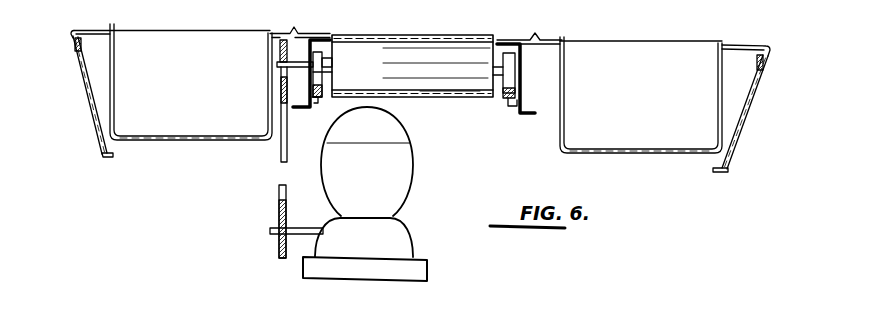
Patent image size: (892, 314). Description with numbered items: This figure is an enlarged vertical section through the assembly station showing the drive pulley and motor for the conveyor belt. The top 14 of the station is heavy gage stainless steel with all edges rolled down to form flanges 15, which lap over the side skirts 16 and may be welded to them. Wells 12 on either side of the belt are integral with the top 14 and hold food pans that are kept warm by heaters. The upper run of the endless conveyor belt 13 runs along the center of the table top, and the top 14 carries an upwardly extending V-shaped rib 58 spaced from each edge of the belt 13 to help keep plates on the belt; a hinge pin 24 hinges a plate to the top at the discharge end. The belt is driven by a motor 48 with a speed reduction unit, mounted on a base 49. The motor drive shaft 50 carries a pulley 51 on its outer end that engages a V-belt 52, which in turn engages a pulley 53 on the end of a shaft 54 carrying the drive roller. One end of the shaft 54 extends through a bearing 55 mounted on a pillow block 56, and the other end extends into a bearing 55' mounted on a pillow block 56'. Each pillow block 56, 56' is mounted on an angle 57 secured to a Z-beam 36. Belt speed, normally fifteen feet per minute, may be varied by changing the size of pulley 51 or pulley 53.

The well 12 is at (140, 138).
The endless conveyor belt 13 is at (434, 34).
The top 14 is at (99, 30).
The flange 15 is at (75, 45).
The side skirt 16 is at (90, 101).
The hinge pin 24 is at (440, 96).
The Z-beam 36 is at (293, 109).
The motor 48 is at (412, 163).
The base 49 is at (415, 278).
The motor drive shaft 50 is at (295, 229).
The pulley 51 is at (272, 246).
The V-belt 52 is at (279, 186).
The pulley 53 is at (279, 52).
The shaft 54 is at (280, 99).
The bearing 55 is at (339, 70).
The bearing 55' is at (526, 67).
The pillow block 56 is at (339, 81).
The pillow block 56' is at (491, 106).
The angle 57 is at (316, 101).
The V-shaped rib 58 is at (304, 31).